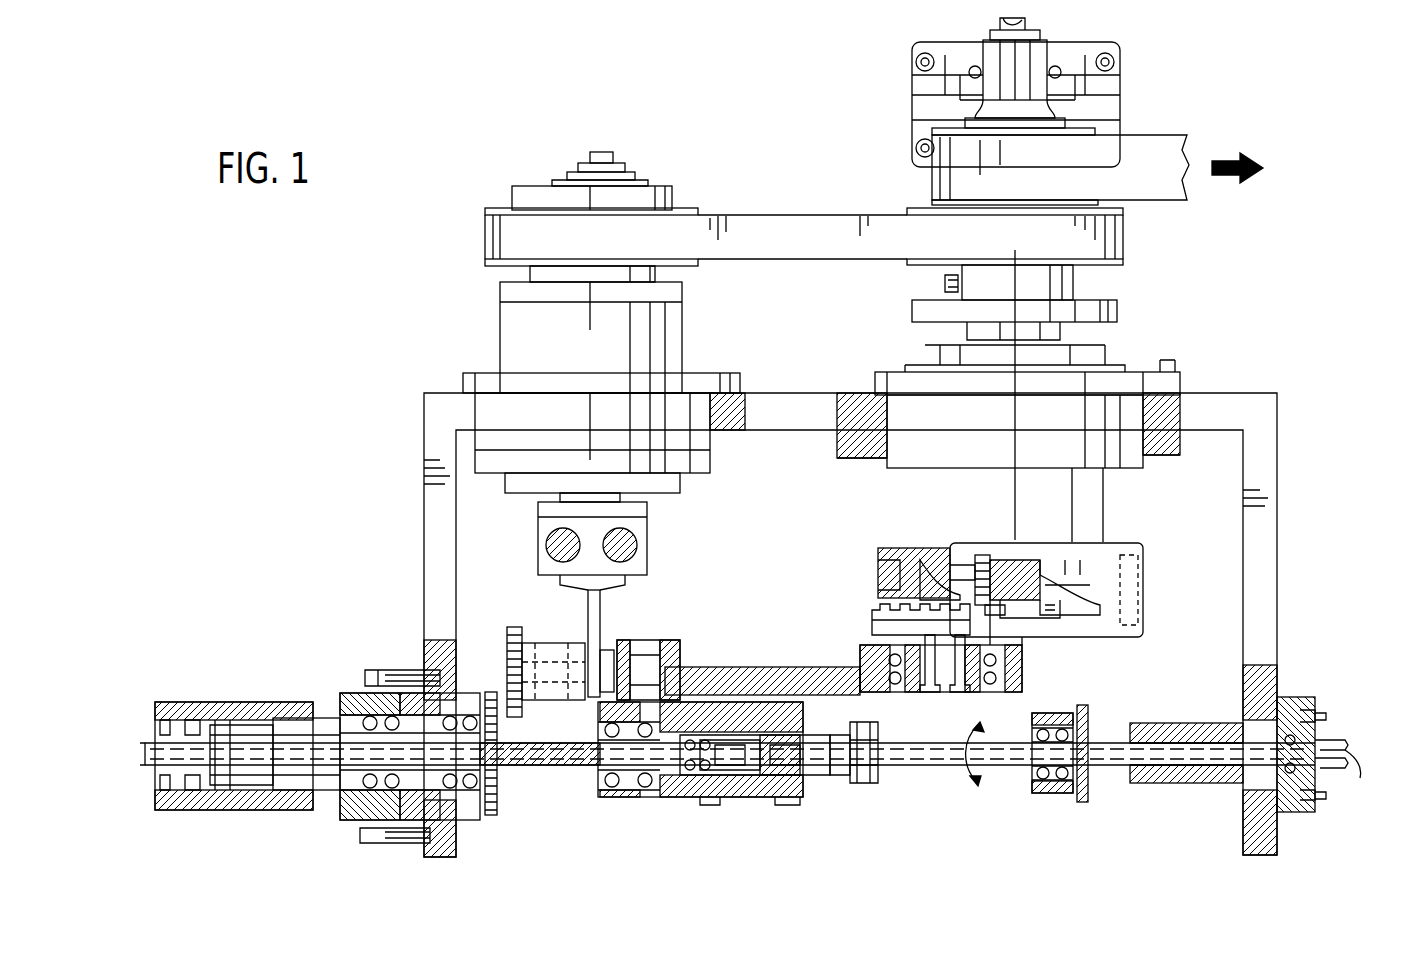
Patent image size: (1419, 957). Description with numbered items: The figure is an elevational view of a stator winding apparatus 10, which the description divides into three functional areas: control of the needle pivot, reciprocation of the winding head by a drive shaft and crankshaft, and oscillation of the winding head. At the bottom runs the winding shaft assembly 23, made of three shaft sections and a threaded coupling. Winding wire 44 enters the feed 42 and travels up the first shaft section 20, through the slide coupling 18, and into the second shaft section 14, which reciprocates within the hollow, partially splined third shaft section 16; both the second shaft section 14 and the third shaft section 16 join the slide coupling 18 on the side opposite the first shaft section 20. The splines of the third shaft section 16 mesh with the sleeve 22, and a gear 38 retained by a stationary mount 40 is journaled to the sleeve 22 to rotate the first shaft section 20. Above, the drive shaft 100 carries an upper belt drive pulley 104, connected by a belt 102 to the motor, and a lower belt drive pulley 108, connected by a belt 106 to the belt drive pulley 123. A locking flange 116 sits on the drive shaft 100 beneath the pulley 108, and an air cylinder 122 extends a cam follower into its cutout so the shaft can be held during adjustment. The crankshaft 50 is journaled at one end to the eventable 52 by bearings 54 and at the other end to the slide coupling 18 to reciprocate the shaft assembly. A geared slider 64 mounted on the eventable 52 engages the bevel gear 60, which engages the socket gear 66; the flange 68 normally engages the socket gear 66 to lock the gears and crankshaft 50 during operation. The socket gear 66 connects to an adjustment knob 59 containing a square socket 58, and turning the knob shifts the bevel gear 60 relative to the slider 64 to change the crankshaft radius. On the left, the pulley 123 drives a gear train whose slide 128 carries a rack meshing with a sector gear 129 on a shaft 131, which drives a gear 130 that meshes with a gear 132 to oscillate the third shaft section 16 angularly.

The stator winding apparatus 10 is at (380, 345).
The second shaft section 14 is at (180, 760).
The third shaft section 16 is at (305, 768).
The slide coupling 18 is at (760, 790).
The first shaft section 20 is at (1202, 783).
The sleeve 22 is at (350, 795).
The winding shaft assembly 23 is at (755, 812).
The gear 38 is at (1083, 803).
The stationary mount 40 is at (1048, 790).
The feed 42 is at (1330, 735).
The winding wire 44 is at (1370, 775).
The crankshaft 50 is at (748, 668).
The eventable 52 is at (950, 692).
The bearings 54 is at (1022, 685).
The square socket 58 is at (878, 568).
The adjustment knob 59 is at (920, 555).
The bevel gear 60 is at (1110, 592).
The geared slider 64 is at (872, 625).
The socket gear 66 is at (978, 553).
The flange 68 is at (995, 605).
The drive shaft 100 is at (1018, 22).
The belt 102 is at (1128, 180).
The belt drive pulley 104 is at (1105, 130).
The belt 106 is at (811, 250).
The belt drive pulley 108 is at (1125, 263).
The locking flange 116 is at (1117, 310).
The air cylinder 122 is at (603, 152).
The belt drive pulley 123 is at (698, 212).
The slide 128 is at (538, 523).
The sector gear 129 is at (600, 620).
The gear 130 is at (507, 660).
The shaft 131 is at (545, 645).
The gear 132 is at (512, 815).